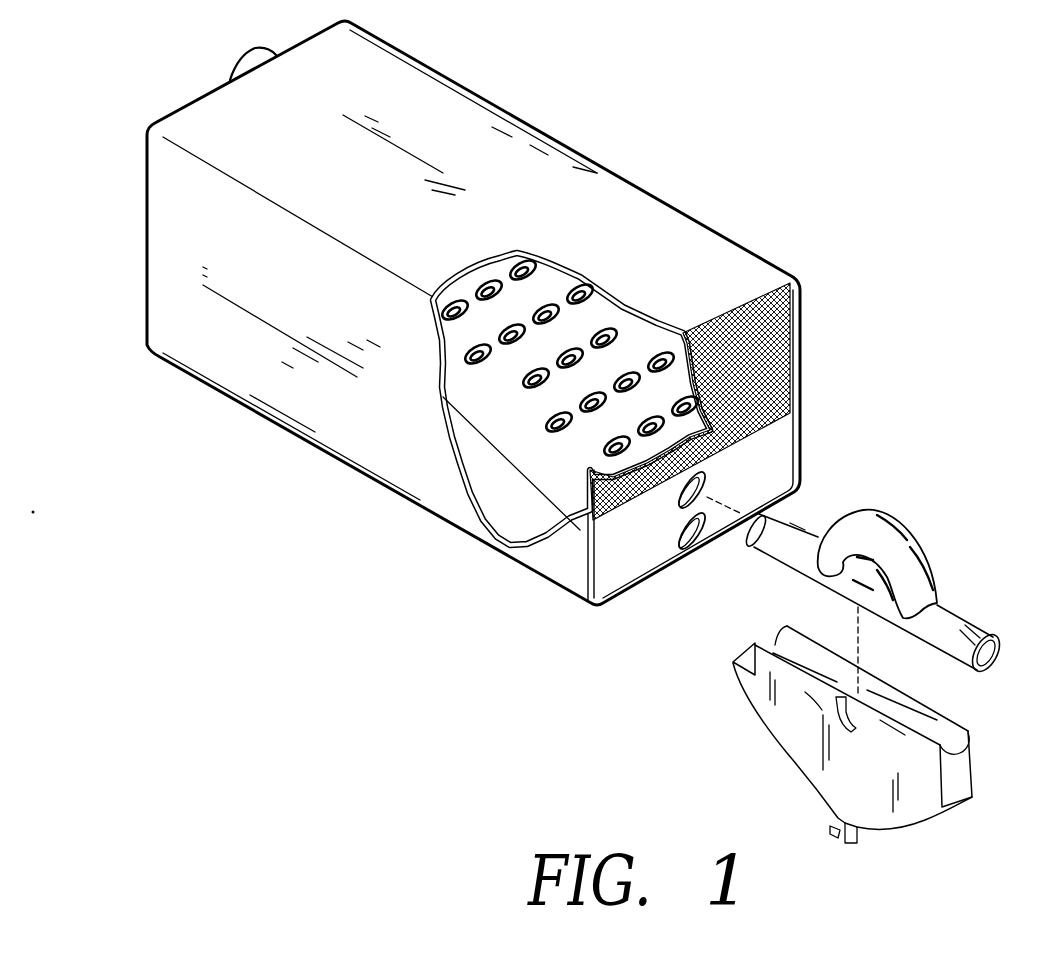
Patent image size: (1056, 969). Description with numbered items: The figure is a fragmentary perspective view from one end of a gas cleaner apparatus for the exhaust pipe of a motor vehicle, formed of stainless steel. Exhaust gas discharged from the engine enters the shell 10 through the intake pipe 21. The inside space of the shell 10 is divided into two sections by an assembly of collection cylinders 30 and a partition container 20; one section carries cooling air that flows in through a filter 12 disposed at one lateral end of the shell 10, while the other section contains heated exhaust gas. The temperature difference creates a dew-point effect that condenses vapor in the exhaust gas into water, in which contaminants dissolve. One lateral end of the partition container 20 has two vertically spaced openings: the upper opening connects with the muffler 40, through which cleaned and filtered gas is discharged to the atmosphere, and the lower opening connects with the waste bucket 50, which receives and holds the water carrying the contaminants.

The shell 10 is at (658, 230).
The filter 12 is at (787, 368).
The partition container 20 is at (505, 505).
The intake pipe 21 is at (243, 62).
The collection cylinders 30 is at (462, 308).
The muffler 40 is at (952, 577).
The waste bucket 50 is at (988, 781).